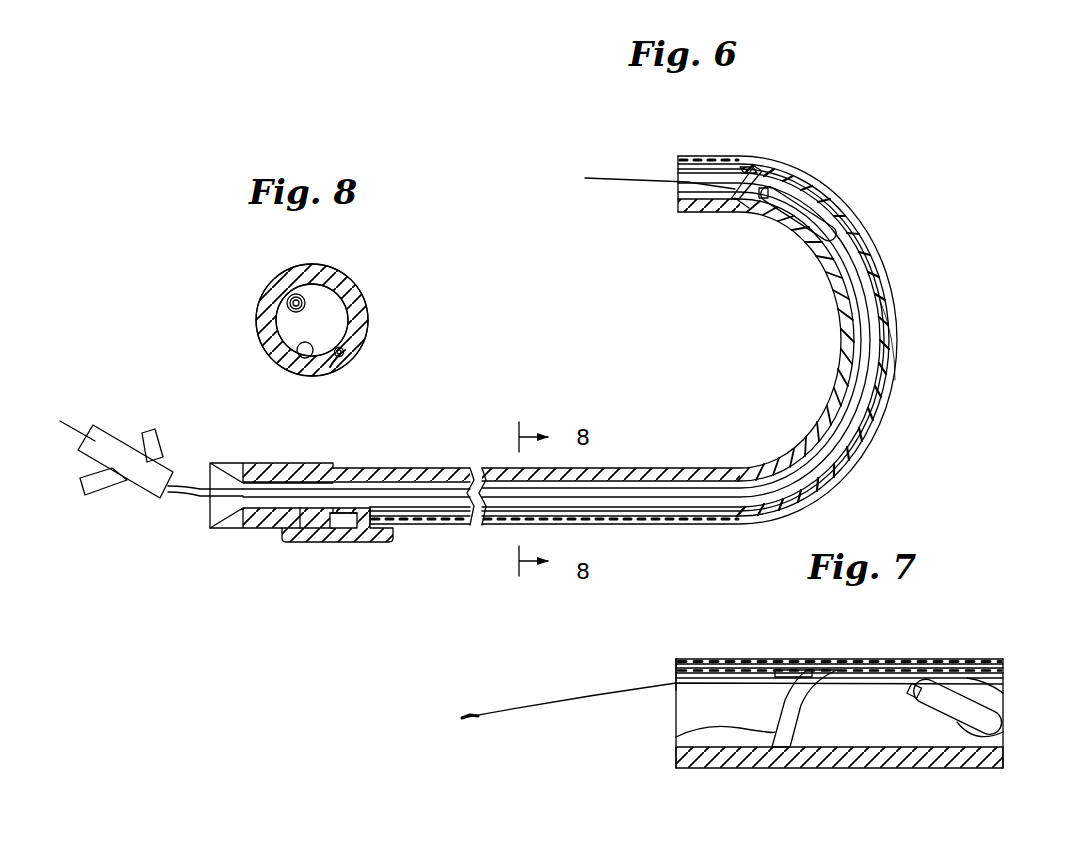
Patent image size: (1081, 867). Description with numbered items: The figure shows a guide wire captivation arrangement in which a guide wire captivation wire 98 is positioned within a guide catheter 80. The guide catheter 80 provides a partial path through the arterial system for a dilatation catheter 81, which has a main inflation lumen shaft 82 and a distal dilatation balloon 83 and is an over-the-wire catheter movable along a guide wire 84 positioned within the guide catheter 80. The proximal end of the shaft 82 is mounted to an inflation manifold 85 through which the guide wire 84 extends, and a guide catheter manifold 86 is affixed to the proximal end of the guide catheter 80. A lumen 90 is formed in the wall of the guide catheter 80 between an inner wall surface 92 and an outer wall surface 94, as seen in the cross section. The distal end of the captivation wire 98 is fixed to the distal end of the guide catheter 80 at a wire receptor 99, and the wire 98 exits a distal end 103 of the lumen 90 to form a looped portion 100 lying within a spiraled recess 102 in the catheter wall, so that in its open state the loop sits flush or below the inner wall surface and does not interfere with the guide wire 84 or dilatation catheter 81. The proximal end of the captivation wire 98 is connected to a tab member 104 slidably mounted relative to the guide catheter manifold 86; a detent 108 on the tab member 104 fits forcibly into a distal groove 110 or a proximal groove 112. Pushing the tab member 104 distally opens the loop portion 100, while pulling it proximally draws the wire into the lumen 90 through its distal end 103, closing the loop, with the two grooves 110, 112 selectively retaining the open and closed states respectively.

In FIG. 6, the guide catheter 80 is at (445, 468).
In FIG. 8, the guide catheter 80 is at (330, 267).
In FIG. 7, the guide catheter 80 is at (967, 768).
In FIG. 6, the dilatation catheter 81 is at (892, 305).
In FIG. 6, the main inflation lumen shaft 82 is at (652, 475).
In FIG. 8, the main inflation lumen shaft 82 is at (348, 315).
In FIG. 7, the distal dilatation balloon 83 is at (1003, 733).
In FIG. 6, the guide wire 84 is at (74, 419).
In FIG. 8, the guide wire 84 is at (285, 302).
In FIG. 7, the guide wire 84 is at (573, 697).
In FIG. 6, the inflation manifold 85 is at (160, 483).
In FIG. 6, the guide catheter manifold 86 is at (262, 463).
In FIG. 6, the lumen 90 is at (433, 527).
In FIG. 8, the lumen 90 is at (344, 352).
In FIG. 7, the lumen 90 is at (927, 663).
In FIG. 6, the inner wall surface 92 is at (413, 500).
In FIG. 8, the inner wall surface 92 is at (297, 353).
In FIG. 7, the inner wall surface 92 is at (892, 675).
In FIG. 6, the outer wall surface 94 is at (353, 468).
In FIG. 8, the outer wall surface 94 is at (347, 298).
In FIG. 7, the outer wall surface 94 is at (990, 660).
In FIG. 6, the guide wire captivation wire 98 is at (500, 528).
In FIG. 8, the guide wire captivation wire 98 is at (347, 362).
In FIG. 7, the guide wire captivation wire 98 is at (817, 670).
In FIG. 6, the wire receptor 99 is at (680, 163).
In FIG. 7, the wire receptor 99 is at (676, 663).
In FIG. 6, the looped portion 100 is at (722, 186).
In FIG. 7, the looped portion 100 is at (787, 683).
In FIG. 6, the spiraled recess 102 is at (748, 210).
In FIG. 7, the spiraled recess 102 is at (677, 737).
In FIG. 6, the distal end of the lumen 103 is at (741, 167).
In FIG. 7, the distal end of the lumen 103 is at (817, 672).
In FIG. 6, the tab member 104 is at (325, 540).
In FIG. 6, the detent 108 is at (302, 517).
In FIG. 6, the distal groove 110 is at (277, 528).
In FIG. 6, the proximal groove 112 is at (240, 527).